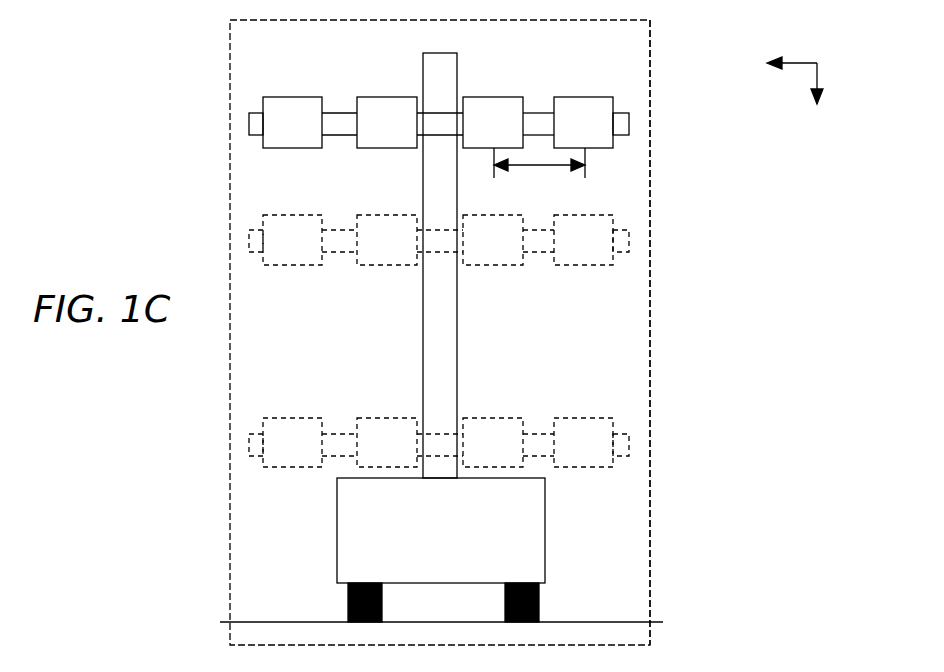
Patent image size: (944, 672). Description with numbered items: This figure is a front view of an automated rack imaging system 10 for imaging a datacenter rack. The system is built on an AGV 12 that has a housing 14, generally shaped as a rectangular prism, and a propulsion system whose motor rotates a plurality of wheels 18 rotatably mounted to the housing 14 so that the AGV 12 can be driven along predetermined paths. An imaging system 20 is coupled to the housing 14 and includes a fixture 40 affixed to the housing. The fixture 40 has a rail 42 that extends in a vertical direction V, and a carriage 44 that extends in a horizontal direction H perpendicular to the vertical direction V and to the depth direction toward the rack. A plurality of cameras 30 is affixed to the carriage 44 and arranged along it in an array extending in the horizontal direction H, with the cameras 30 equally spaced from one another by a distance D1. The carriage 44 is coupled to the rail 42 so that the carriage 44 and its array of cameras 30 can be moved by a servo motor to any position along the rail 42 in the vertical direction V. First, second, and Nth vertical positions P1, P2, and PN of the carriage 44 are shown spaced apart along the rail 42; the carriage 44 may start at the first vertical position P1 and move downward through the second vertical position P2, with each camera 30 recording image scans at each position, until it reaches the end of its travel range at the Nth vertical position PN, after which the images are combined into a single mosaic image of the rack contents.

The automated rack imaging system 10 is at (228, 26).
The AGV 12 is at (531, 550).
The housing 14 is at (546, 537).
The wheels 18 is at (540, 598).
The imaging system 20 is at (620, 355).
The cameras 30 is at (284, 97).
The fixture 40 is at (470, 80).
The rail 42 is at (437, 53).
The carriage 44 is at (340, 135).
The first vertical position P1 is at (488, 110).
The second vertical position P2 is at (629, 242).
The Nth vertical position PN is at (629, 445).
The distance D1 is at (540, 166).
The horizontal direction H is at (800, 63).
The vertical direction V is at (818, 76).